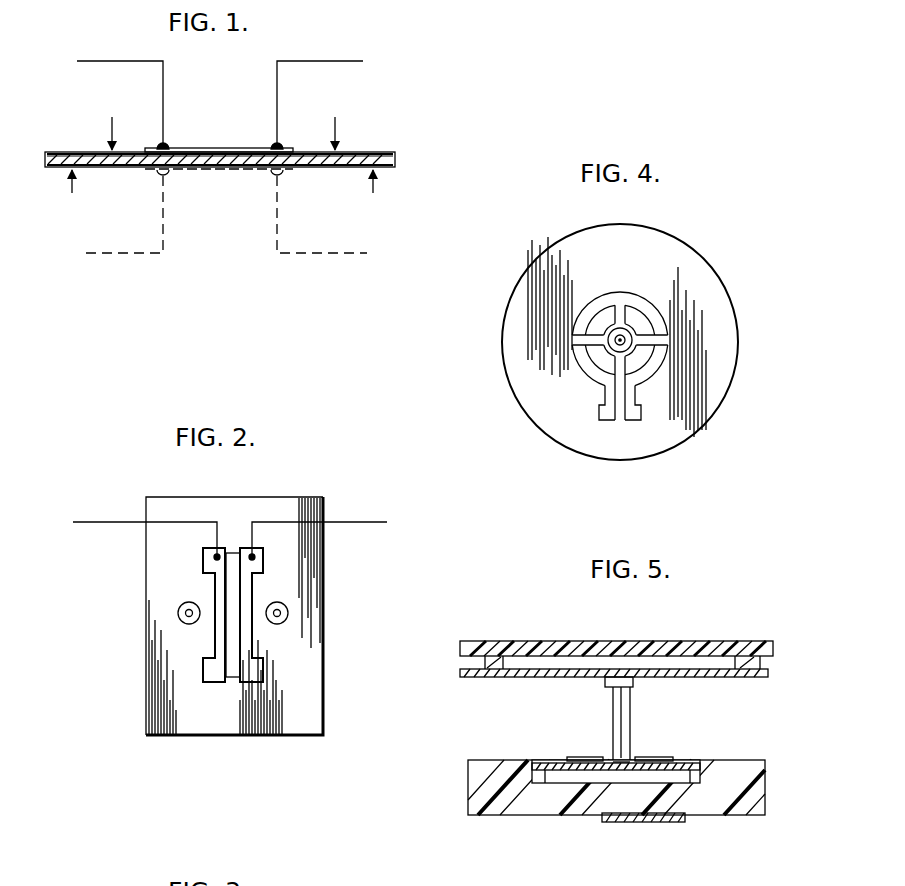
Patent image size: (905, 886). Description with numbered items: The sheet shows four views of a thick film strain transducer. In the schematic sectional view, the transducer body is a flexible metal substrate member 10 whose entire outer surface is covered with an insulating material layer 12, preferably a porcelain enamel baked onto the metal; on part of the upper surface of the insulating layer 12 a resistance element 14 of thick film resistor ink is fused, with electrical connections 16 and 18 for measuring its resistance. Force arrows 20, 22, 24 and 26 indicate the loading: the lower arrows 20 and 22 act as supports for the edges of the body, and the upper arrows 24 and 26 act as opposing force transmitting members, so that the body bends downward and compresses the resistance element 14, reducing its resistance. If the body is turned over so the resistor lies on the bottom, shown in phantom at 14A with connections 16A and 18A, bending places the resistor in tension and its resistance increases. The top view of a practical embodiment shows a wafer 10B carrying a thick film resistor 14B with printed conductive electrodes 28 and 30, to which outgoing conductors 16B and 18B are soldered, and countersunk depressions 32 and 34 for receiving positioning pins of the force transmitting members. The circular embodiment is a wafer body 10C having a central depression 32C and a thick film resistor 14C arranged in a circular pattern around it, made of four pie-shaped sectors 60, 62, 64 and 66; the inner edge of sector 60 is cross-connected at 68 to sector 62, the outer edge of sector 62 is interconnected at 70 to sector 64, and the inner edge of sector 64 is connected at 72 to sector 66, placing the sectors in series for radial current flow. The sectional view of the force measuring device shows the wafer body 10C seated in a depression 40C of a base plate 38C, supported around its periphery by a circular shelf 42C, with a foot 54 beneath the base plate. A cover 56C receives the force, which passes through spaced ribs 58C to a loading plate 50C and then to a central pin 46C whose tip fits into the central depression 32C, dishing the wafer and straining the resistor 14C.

In FIG. 1, the flexible metal substrate member 10 is at (395, 160).
In FIG. 1, the insulating material layer 12 is at (380, 150).
In FIG. 1, the resistance element 14 is at (200, 148).
In FIG. 1, the resistor in phantom position 14A is at (215, 176).
In FIG. 1, the electrical connection 16 is at (163, 80).
In FIG. 1, the electrical connection 18 is at (277, 80).
In FIG. 1, the electrical connection (phantom) 16A is at (127, 256).
In FIG. 1, the electrical connection (phantom) 18A is at (297, 256).
In FIG. 1, the lower force arrow 20 is at (72, 190).
In FIG. 1, the lower force arrow 22 is at (373, 193).
In FIG. 1, the upper force arrow 24 is at (112, 122).
In FIG. 1, the upper force arrow 26 is at (335, 122).
In FIG. 2, the transducer body or wafer 10B is at (323, 552).
In FIG. 2, the thick film resistor 14B is at (233, 553).
In FIG. 2, the outgoing electrical conductor 16B is at (92, 521).
In FIG. 2, the outgoing electrical conductor 18B is at (365, 521).
In FIG. 2, the printed conductive electrode 28 is at (215, 585).
In FIG. 2, the printed conductive electrode 30 is at (247, 587).
In FIG. 2, the depression 32 is at (180, 615).
In FIG. 2, the depression 34 is at (288, 617).
In FIG. 4, the circular transducer wafer body 10C is at (638, 266).
In FIG. 5, the circular transducer wafer body 10C is at (545, 760).
In FIG. 4, the thick film resistor 14C is at (655, 385).
In FIG. 5, the thick film resistor 14C is at (585, 745).
In FIG. 4, the central depression 32C is at (610, 340).
In FIG. 5, the central depression 32C is at (620, 770).
In FIG. 4, the pie-shaped sector 60 is at (640, 360).
In FIG. 4, the pie-shaped sector 62 is at (645, 338).
In FIG. 4, the pie-shaped sector 64 is at (605, 325).
In FIG. 4, the pie-shaped sector 66 is at (605, 363).
In FIG. 4, the cross-connection 68 is at (627, 332).
In FIG. 4, the interconnection 70 is at (655, 318).
In FIG. 4, the connection 72 is at (608, 345).
In FIG. 5, the base plate 38C is at (745, 750).
In FIG. 5, the depression or cavity 40C is at (565, 780).
In FIG. 5, the circular shelf 42C is at (530, 775).
In FIG. 5, the pin 46C is at (630, 713).
In FIG. 5, the loading plate 50C is at (733, 678).
In FIG. 5, the foot 54 is at (655, 822).
In FIG. 5, the cover 56C is at (565, 641).
In FIG. 5, the load transmitting rib 58C is at (733, 657).